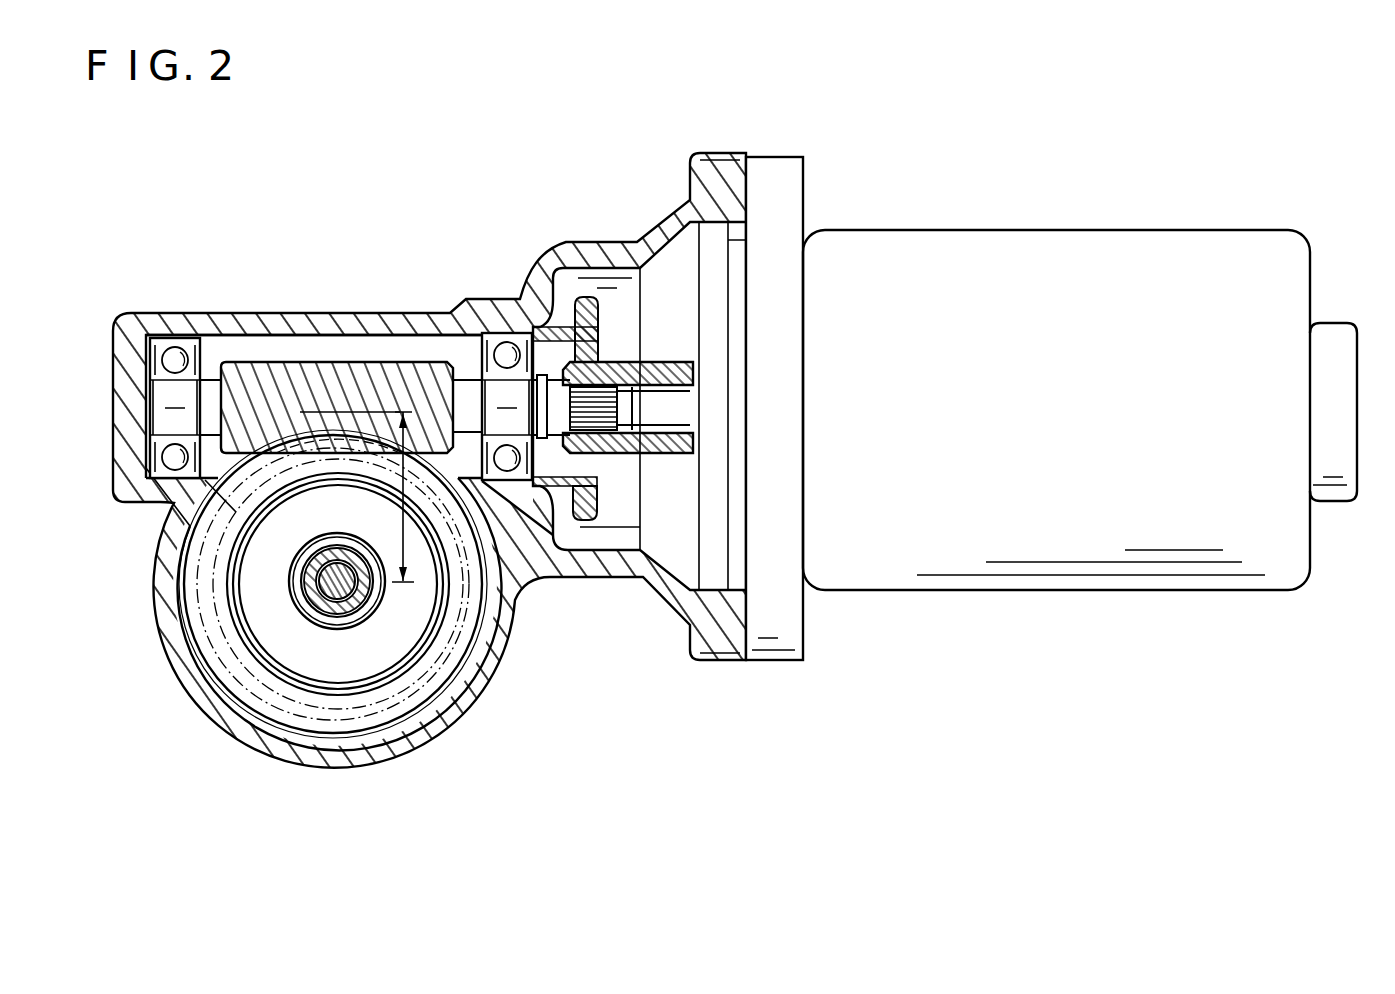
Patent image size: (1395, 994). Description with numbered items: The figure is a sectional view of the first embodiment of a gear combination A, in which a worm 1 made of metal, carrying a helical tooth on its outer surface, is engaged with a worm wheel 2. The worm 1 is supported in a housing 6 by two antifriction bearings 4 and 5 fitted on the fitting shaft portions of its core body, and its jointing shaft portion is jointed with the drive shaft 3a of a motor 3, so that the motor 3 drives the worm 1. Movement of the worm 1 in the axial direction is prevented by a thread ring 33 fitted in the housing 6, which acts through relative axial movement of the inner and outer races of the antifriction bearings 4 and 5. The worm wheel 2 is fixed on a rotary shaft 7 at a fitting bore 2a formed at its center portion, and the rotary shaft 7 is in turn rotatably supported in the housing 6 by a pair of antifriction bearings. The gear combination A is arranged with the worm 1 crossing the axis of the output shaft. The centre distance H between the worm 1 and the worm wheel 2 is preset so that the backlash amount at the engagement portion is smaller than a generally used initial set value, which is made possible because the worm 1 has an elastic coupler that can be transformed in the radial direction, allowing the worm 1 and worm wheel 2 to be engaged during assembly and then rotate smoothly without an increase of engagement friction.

The worm 1 is at (315, 370).
The worm wheel 2 is at (178, 584).
The fitting bore 2a is at (304, 623).
The motor 3 is at (1012, 228).
The drive shaft 3a is at (665, 400).
The antifriction bearing 4 is at (502, 352).
The antifriction bearing 5 is at (175, 358).
The housing 6 is at (180, 656).
The rotary shaft 7 is at (365, 603).
The thread ring 33 is at (545, 262).
The gear combination A is at (240, 350).
The centre distance H is at (395, 497).